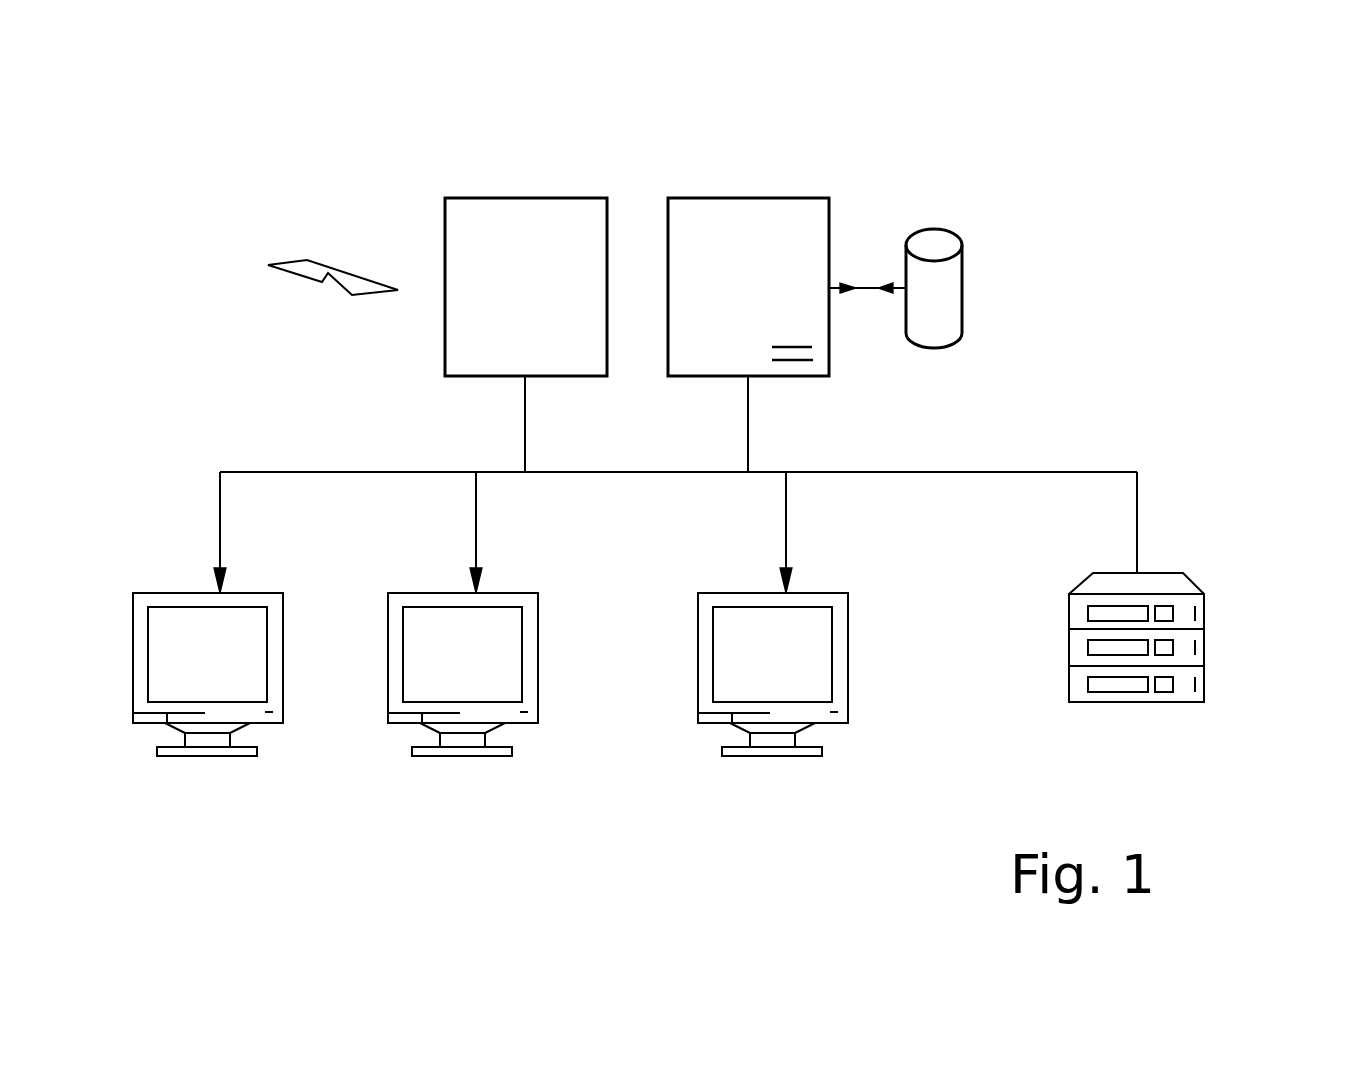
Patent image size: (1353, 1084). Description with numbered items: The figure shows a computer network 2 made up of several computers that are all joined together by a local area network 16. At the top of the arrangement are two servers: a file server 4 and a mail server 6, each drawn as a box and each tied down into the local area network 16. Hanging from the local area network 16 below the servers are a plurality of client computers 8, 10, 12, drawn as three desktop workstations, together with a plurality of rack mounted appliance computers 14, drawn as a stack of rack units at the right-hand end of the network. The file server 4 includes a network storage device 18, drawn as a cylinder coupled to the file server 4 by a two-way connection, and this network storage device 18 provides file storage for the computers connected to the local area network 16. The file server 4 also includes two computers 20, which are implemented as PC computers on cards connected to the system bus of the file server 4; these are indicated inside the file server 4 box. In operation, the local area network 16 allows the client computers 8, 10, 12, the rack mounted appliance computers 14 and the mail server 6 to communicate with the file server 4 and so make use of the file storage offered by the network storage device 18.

The computer network 2 is at (1186, 132).
The file server 4 is at (780, 198).
The mail server 6 is at (527, 198).
The client computer 8 is at (258, 595).
The client computer 10 is at (513, 595).
The client computer 12 is at (823, 595).
The rack mounted appliance computers 14 is at (1204, 640).
The local area network 16 is at (1035, 472).
The network storage device 18 is at (953, 284).
The computers 20 is at (803, 354).